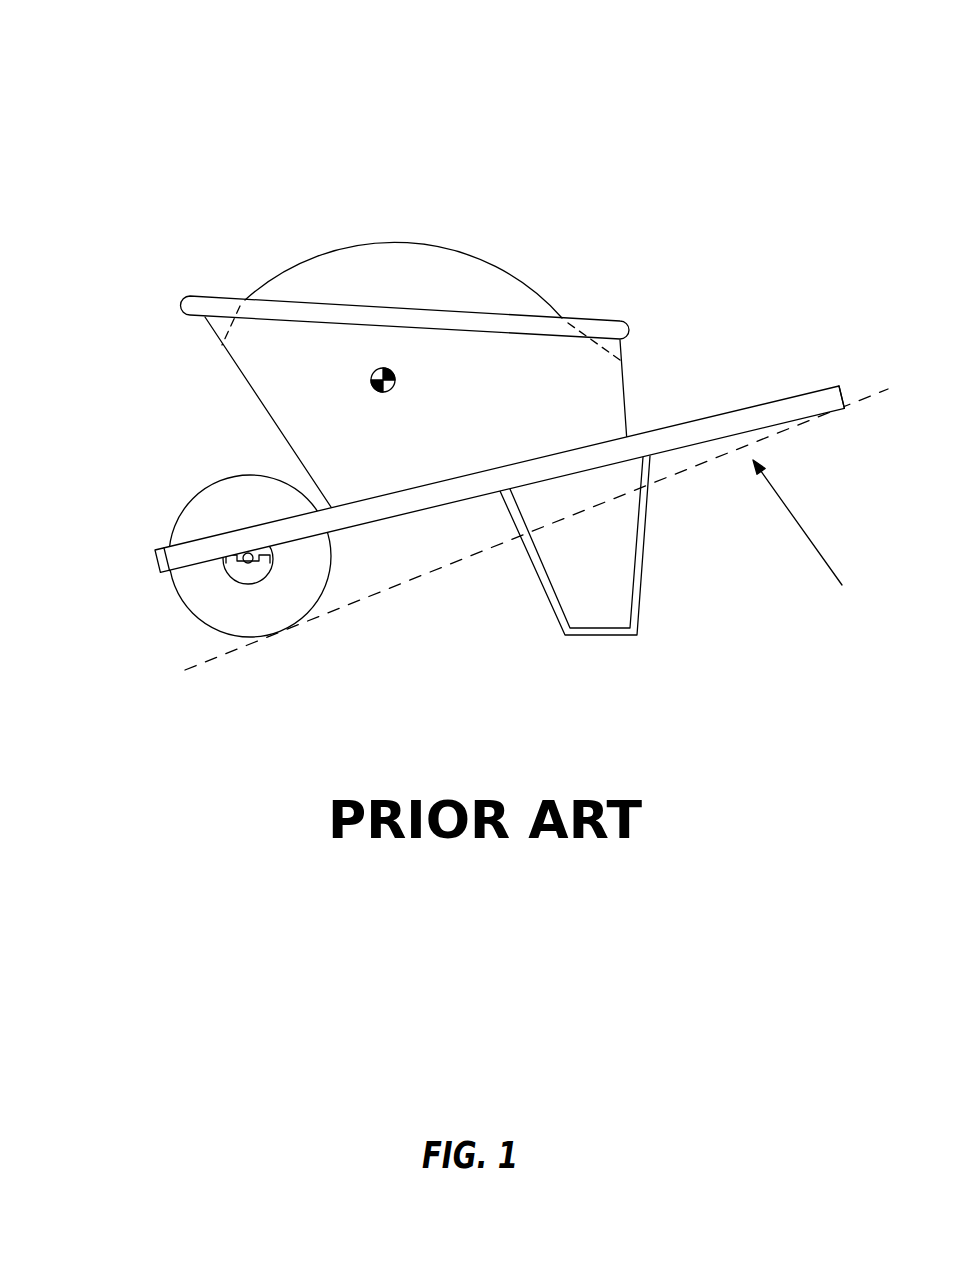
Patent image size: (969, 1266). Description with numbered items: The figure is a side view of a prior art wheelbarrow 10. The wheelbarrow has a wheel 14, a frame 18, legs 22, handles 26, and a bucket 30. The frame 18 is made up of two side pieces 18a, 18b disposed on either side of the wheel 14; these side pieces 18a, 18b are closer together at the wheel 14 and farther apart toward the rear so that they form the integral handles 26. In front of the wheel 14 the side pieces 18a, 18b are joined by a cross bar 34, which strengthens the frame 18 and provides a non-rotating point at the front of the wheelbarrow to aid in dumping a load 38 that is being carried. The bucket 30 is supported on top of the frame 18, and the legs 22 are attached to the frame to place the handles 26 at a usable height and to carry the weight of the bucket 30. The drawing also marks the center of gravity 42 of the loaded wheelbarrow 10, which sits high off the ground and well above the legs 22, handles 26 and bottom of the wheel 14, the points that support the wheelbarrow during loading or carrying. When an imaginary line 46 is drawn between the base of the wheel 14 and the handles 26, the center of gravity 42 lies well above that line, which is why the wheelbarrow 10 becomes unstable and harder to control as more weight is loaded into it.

The wheelbarrow 10 is at (478, 380).
The wheel 14 is at (233, 612).
The frame 18 is at (478, 536).
The frame side piece 18a is at (478, 536).
The frame side piece 18b is at (478, 536).
The legs 22 is at (633, 572).
The handles 26 is at (813, 403).
The bucket 30 is at (479, 329).
The cross bar 34 is at (148, 560).
The load 38 is at (448, 278).
The center of gravity 42 is at (383, 380).
The imaginary line 46 is at (812, 537).